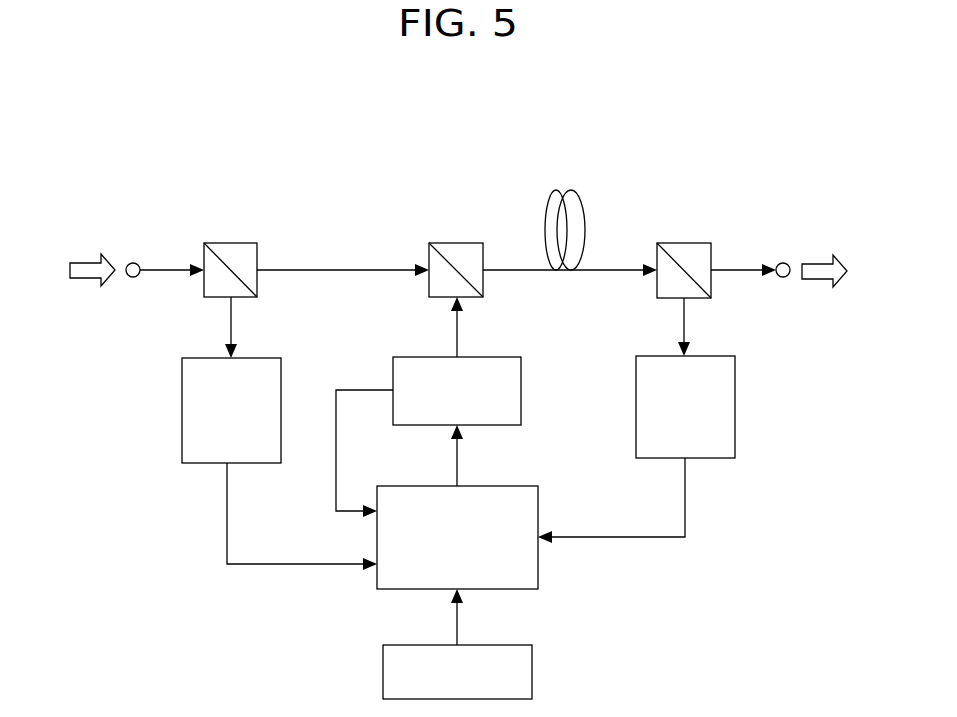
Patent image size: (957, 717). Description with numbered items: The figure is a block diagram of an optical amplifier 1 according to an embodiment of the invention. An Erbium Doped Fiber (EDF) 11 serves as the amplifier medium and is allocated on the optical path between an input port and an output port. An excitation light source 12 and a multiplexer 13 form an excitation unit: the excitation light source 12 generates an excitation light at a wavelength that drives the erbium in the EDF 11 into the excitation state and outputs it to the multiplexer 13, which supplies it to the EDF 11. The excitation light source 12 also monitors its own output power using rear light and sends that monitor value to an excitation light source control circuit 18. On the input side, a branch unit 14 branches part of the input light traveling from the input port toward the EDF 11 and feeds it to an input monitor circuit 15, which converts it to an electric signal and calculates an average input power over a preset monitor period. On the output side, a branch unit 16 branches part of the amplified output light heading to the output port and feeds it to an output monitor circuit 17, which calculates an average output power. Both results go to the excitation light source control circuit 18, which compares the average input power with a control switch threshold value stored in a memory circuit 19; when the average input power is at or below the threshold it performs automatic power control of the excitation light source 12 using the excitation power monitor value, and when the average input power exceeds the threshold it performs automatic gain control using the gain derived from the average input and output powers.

The optical amplifier 1 is at (232, 165).
The Erbium Doped Fiber (EDF) 11 is at (552, 195).
The excitation light source 12 is at (522, 390).
The multiplexer 13 is at (457, 243).
The branch unit 14 is at (232, 243).
The input monitor circuit 15 is at (182, 407).
The branch unit 16 is at (682, 243).
The output monitor circuit 17 is at (735, 403).
The excitation light source control circuit 18 is at (502, 486).
The memory circuit 19 is at (532, 671).